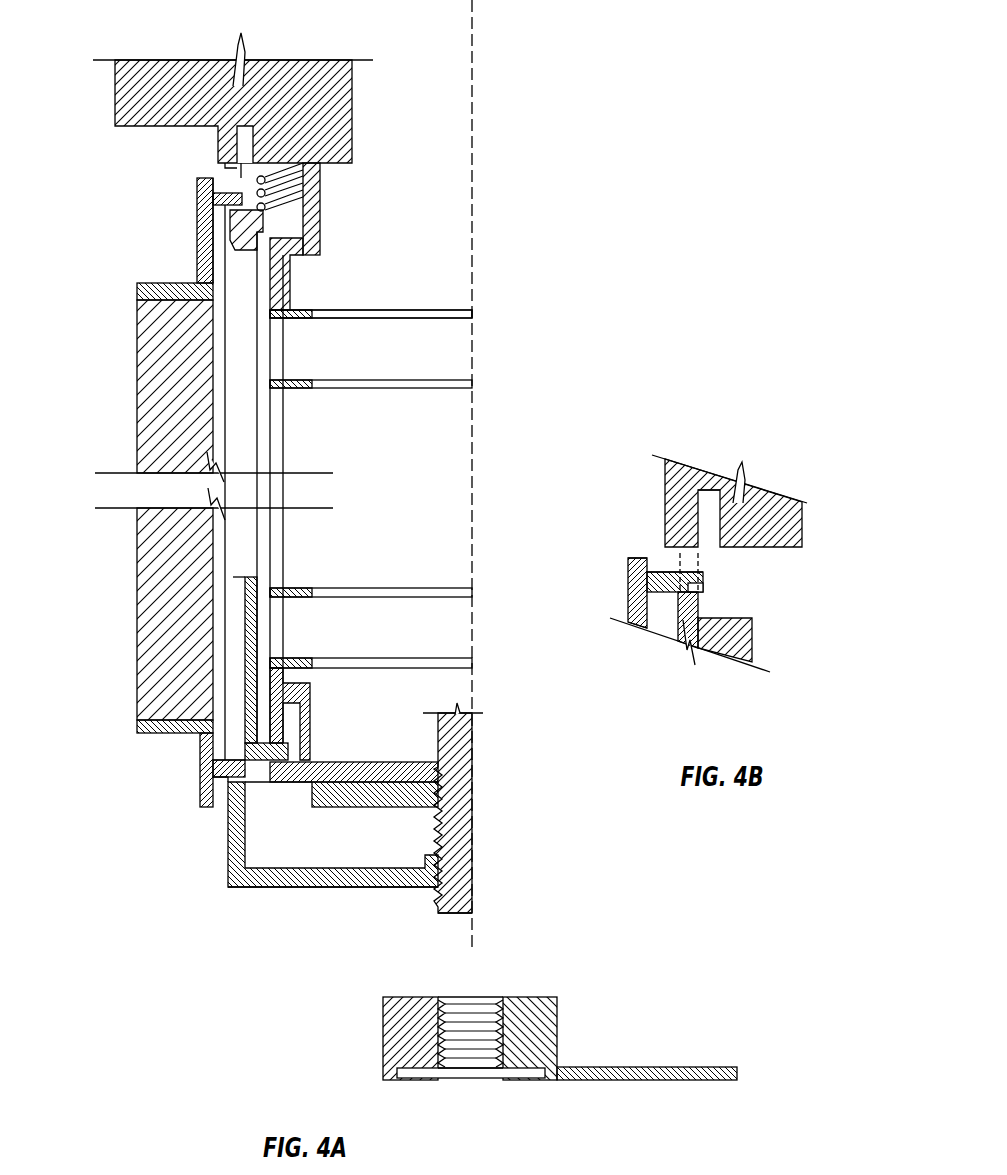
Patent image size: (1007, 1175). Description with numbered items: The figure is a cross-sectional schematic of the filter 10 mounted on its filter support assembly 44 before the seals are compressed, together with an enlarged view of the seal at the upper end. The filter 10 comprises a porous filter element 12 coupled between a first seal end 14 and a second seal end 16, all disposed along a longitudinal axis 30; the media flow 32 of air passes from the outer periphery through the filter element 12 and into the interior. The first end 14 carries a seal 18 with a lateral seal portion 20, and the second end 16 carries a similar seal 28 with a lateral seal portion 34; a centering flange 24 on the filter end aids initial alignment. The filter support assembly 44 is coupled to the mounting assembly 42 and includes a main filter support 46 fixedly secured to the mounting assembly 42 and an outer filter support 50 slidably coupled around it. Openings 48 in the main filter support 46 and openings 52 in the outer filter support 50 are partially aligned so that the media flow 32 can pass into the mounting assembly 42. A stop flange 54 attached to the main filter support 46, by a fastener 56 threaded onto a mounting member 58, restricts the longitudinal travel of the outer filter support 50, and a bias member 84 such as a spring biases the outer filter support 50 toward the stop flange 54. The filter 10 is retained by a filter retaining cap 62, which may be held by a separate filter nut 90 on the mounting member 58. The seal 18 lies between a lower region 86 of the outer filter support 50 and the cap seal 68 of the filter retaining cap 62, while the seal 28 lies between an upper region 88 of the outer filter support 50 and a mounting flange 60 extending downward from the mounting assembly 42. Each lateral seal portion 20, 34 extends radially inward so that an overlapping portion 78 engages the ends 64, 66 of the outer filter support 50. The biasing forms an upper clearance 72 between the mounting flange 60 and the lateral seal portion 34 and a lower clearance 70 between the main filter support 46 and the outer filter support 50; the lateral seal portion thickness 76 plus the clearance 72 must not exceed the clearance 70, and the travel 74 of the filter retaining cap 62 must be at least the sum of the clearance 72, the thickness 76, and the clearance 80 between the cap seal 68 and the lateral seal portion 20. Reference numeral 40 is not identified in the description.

In FIG. 4A, the filter 10 is at (118, 521).
In FIG. 4A, the filter element 12 is at (137, 580).
In FIG. 4A, the first seal end 14 is at (145, 736).
In FIG. 4A, the second seal end 16 is at (165, 281).
In FIG. 4B, the second seal end 16 is at (622, 560).
In FIG. 4A, the seal 18 is at (195, 757).
In FIG. 4A, the lateral seal portion 20 is at (222, 768).
In FIG. 4A, the centering flange 24 is at (213, 795).
In FIG. 4A, the seal 28 is at (195, 183).
In FIG. 4B, the seal 28 is at (628, 606).
In FIG. 4A, the longitudinal axis 30 is at (472, 28).
In FIG. 4A, the media flow 32 is at (367, 402).
In FIG. 4A, the lateral seal portion 34 is at (222, 205).
In FIG. 4B, the lateral seal portion 34 is at (668, 595).
In FIG. 4A, the upper assembly 40 is at (428, 210).
In FIG. 4A, the mounting assembly 42 is at (352, 88).
In FIG. 4B, the mounting assembly 42 is at (758, 503).
In FIG. 4A, the filter support assembly 44 is at (296, 278).
In FIG. 4A, the main filter support 46 is at (320, 247).
In FIG. 4A, the openings 48 is at (285, 355).
In FIG. 4A, the outer filter support 50 is at (263, 222).
In FIG. 4B, the outer filter support 50 is at (752, 648).
In FIG. 4A, the openings 52 is at (358, 360).
In FIG. 4A, the stop flange 54 is at (280, 787).
In FIG. 4A, the fastener 56 is at (370, 808).
In FIG. 4A, the mounting member 58 is at (450, 915).
In FIG. 4A, the mounting flange 60 is at (228, 180).
In FIG. 4B, the mounting flange 60 is at (668, 548).
In FIG. 4A, the filter retaining cap 62 is at (230, 858).
In FIG. 4A, the end 64 is at (238, 760).
In FIG. 4A, the end 66 is at (220, 192).
In FIG. 4B, the end 66 is at (700, 585).
In FIG. 4A, the cap seal 68 is at (230, 775).
In FIG. 4A, the lower clearance 70 is at (283, 718).
In FIG. 4A, the upper clearance 72 is at (240, 178).
In FIG. 4B, the upper clearance 72 is at (678, 570).
In FIG. 4A, the travel 74 is at (440, 840).
In FIG. 4A, the lateral seal portion thickness 76 is at (263, 214).
In FIG. 4B, the lateral seal portion thickness 76 is at (703, 585).
In FIG. 4B, the overlapping portion 78 is at (648, 565).
In FIG. 4A, the clearance 80 is at (232, 780).
In FIG. 4A, the bias member 84 is at (305, 190).
In FIG. 4A, the lower region 86 is at (133, 863).
In FIG. 4A, the upper region 88 is at (98, 168).
In FIG. 4B, the upper region 88 is at (818, 572).
In FIG. 4A, the filter nut 90 is at (557, 1015).